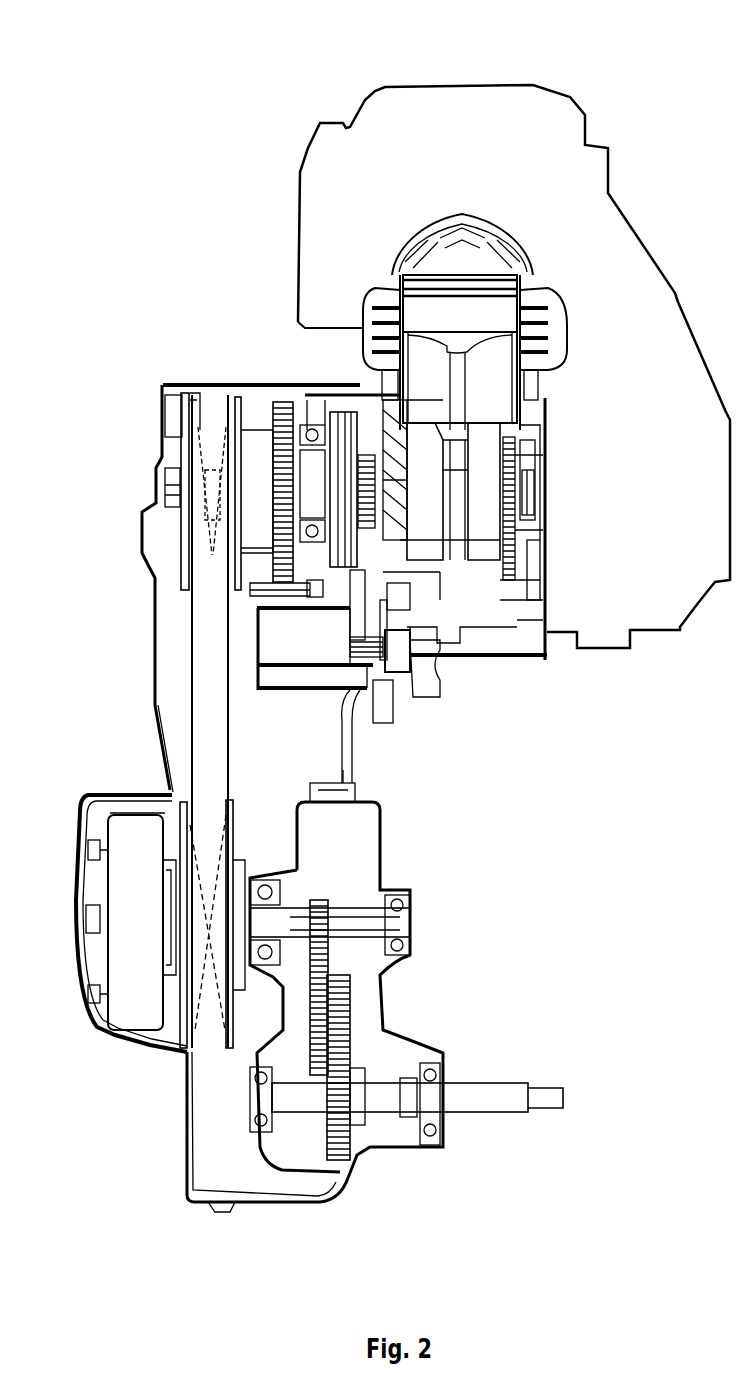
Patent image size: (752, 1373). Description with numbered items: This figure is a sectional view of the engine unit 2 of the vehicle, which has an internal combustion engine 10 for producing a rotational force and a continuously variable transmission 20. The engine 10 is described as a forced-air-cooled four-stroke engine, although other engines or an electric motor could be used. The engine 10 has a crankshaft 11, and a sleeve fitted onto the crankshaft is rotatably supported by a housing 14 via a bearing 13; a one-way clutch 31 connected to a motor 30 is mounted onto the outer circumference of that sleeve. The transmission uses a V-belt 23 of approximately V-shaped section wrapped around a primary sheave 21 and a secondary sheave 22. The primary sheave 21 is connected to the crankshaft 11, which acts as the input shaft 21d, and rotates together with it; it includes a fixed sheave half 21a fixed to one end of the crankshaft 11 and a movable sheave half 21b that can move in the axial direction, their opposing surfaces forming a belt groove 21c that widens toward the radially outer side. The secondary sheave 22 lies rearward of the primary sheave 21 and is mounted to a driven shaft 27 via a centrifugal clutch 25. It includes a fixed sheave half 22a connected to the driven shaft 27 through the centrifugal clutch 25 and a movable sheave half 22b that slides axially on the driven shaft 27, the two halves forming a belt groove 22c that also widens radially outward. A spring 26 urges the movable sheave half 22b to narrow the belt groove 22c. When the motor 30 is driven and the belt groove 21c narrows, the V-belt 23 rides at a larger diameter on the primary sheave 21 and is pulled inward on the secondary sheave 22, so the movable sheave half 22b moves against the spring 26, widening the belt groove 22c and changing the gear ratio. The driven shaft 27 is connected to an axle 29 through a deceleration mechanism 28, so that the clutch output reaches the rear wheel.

The engine unit 2 is at (594, 74).
The internal combustion engine 10 is at (546, 688).
The crankshaft 11 is at (527, 490).
The input shaft 21d is at (590, 489).
The bearing 13 is at (405, 422).
The housing 14 is at (285, 400).
The one-way clutch 31 is at (332, 412).
The continuously variable transmission 20 is at (150, 530).
The primary sheave 21 is at (163, 413).
The fixed sheave half 21a is at (185, 462).
The movable sheave half 21b is at (242, 392).
The belt groove 21c is at (195, 390).
The V-belt 23 is at (222, 722).
The centrifugal clutch 25 is at (118, 912).
The spring 26 is at (162, 922).
The secondary sheave 22 is at (186, 1057).
The fixed sheave half 22a is at (236, 1032).
The movable sheave half 22b is at (172, 1060).
The belt groove 22c is at (233, 788).
The driven shaft 27 is at (378, 925).
The deceleration mechanism 28 is at (372, 962).
The axle 29 is at (478, 1090).
The motor 30 is at (428, 697).